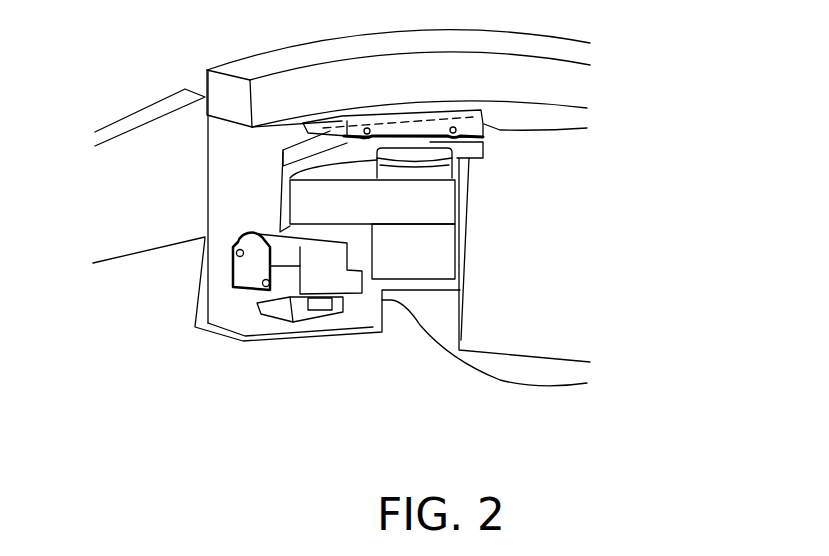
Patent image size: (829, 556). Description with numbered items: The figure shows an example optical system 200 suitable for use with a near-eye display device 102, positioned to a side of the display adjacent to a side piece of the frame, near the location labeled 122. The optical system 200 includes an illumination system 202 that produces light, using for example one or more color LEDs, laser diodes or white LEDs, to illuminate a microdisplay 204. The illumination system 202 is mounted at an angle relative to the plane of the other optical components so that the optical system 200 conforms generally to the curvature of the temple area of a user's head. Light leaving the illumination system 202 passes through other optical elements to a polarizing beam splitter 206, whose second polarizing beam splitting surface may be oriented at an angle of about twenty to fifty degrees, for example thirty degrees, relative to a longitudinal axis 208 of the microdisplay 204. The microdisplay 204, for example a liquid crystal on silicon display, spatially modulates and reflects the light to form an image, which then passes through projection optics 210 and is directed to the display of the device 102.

The display device 102 is at (316, 34).
The panel 122 is at (138, 86).
The optical system 200 is at (516, 158).
The illumination system 202 is at (229, 308).
The microdisplay 204 is at (447, 102).
The polarizing beam splitter 206 is at (469, 208).
The longitudinal axis 208 is at (499, 117).
The projection optics 210 is at (469, 248).